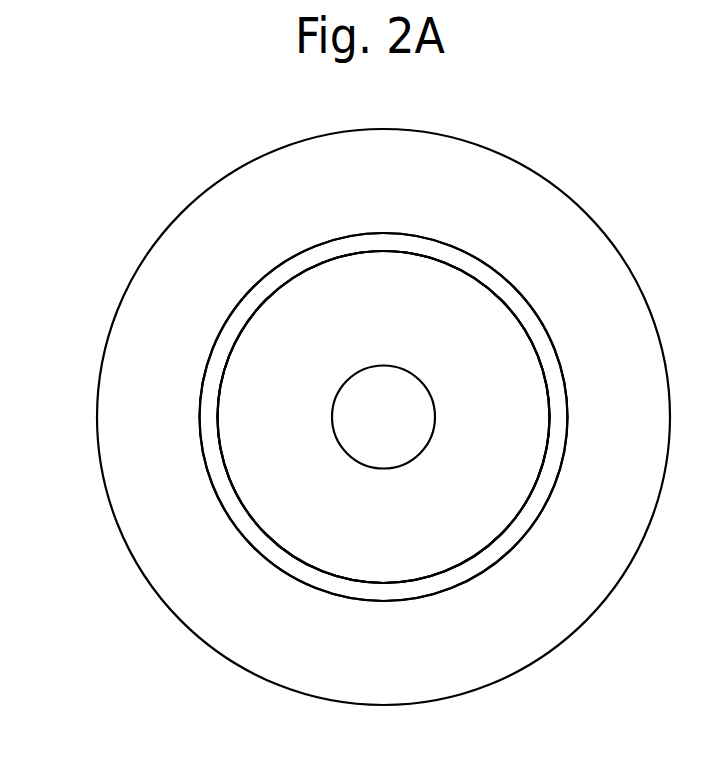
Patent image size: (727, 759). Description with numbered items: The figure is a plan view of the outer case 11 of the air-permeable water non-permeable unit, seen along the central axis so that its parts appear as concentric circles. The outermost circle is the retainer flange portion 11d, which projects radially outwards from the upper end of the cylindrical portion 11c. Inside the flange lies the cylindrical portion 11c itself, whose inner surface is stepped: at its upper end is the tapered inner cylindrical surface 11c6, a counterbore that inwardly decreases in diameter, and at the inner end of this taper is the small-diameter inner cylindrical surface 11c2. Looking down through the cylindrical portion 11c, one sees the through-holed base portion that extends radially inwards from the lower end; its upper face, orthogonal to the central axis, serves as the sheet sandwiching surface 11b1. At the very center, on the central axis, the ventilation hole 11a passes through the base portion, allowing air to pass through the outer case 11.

The outer case 11 is at (498, 133).
The ventilation hole 11a is at (433, 431).
The sheet sandwiching surface 11b1 is at (418, 535).
The cylindrical portion 11c is at (270, 209).
The small-diameter inner cylindrical surface 11c2 is at (458, 285).
The tapered inner cylindrical surface 11c6 is at (223, 487).
The retainer flange portion 11d is at (502, 166).